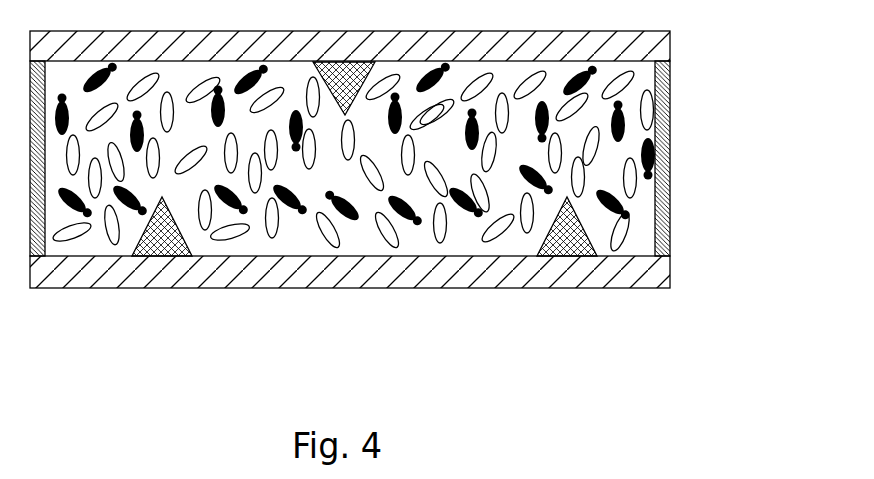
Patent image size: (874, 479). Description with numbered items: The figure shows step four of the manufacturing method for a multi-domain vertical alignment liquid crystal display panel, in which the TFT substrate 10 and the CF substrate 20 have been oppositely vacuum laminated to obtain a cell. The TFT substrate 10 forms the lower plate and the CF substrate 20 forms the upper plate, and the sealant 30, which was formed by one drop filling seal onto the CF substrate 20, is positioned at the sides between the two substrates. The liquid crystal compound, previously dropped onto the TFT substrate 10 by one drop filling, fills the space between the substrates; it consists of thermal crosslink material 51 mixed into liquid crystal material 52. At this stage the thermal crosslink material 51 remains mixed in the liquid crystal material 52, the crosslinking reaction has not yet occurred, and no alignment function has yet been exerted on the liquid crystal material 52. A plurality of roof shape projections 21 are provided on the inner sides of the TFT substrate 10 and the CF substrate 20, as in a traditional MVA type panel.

The TFT substrate 10 is at (660, 273).
The CF substrate 20 is at (648, 50).
The roof shape projections 21 is at (570, 256).
The sealant 30 is at (667, 115).
The thermal crosslink material 51 is at (668, 157).
The liquid crystal material 52 is at (620, 230).